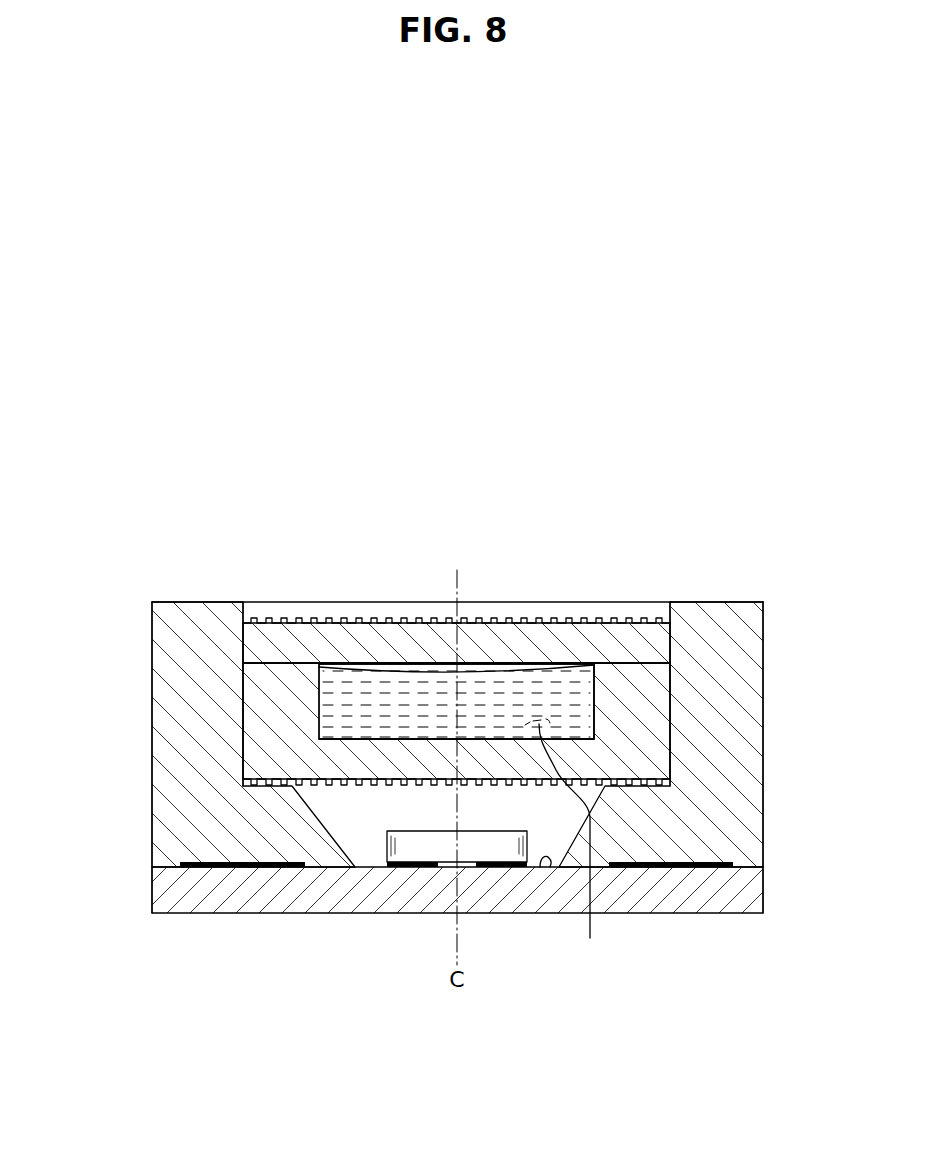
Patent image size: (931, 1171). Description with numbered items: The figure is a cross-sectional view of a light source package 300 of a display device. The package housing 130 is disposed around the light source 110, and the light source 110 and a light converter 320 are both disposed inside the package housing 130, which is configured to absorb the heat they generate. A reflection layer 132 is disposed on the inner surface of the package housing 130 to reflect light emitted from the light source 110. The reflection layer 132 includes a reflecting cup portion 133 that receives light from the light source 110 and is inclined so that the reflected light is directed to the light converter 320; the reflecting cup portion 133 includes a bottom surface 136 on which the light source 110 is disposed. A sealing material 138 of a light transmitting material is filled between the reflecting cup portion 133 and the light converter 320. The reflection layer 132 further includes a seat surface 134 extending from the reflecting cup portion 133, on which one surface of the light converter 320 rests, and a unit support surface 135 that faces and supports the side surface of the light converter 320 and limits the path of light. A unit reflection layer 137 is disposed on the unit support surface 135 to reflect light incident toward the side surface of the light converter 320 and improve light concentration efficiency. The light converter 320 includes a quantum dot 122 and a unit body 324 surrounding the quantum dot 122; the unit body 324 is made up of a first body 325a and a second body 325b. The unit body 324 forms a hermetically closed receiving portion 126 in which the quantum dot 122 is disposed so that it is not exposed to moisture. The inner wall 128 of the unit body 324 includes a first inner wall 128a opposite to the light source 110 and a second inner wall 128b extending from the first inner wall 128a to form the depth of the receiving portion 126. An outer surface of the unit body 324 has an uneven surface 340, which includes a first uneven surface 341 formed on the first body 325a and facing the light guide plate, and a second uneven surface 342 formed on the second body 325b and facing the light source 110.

The light source package 300 is at (684, 536).
The light source 110 is at (388, 847).
The quantum dot 122 is at (563, 683).
The receiving portion 126 is at (457, 845).
The inner wall 128 is at (848, 717).
The first inner wall 128a is at (558, 738).
The second inner wall 128b is at (593, 687).
The package housing 130 is at (745, 640).
The reflection layer 132 is at (80, 632).
The reflecting cup portion 133 is at (337, 836).
The seat surface 134 is at (291, 784).
The unit support surface 135 is at (243, 687).
The bottom surface 136 is at (540, 867).
The unit reflection layer 137 is at (253, 632).
The sealing material 138 is at (365, 827).
The light converter 320 is at (385, 602).
The unit body 324 is at (305, 512).
The first body 325a is at (316, 642).
The second body 325b is at (283, 688).
The uneven surface 340 is at (530, 513).
The first uneven surface 341 is at (432, 610).
The second uneven surface 342 is at (473, 783).